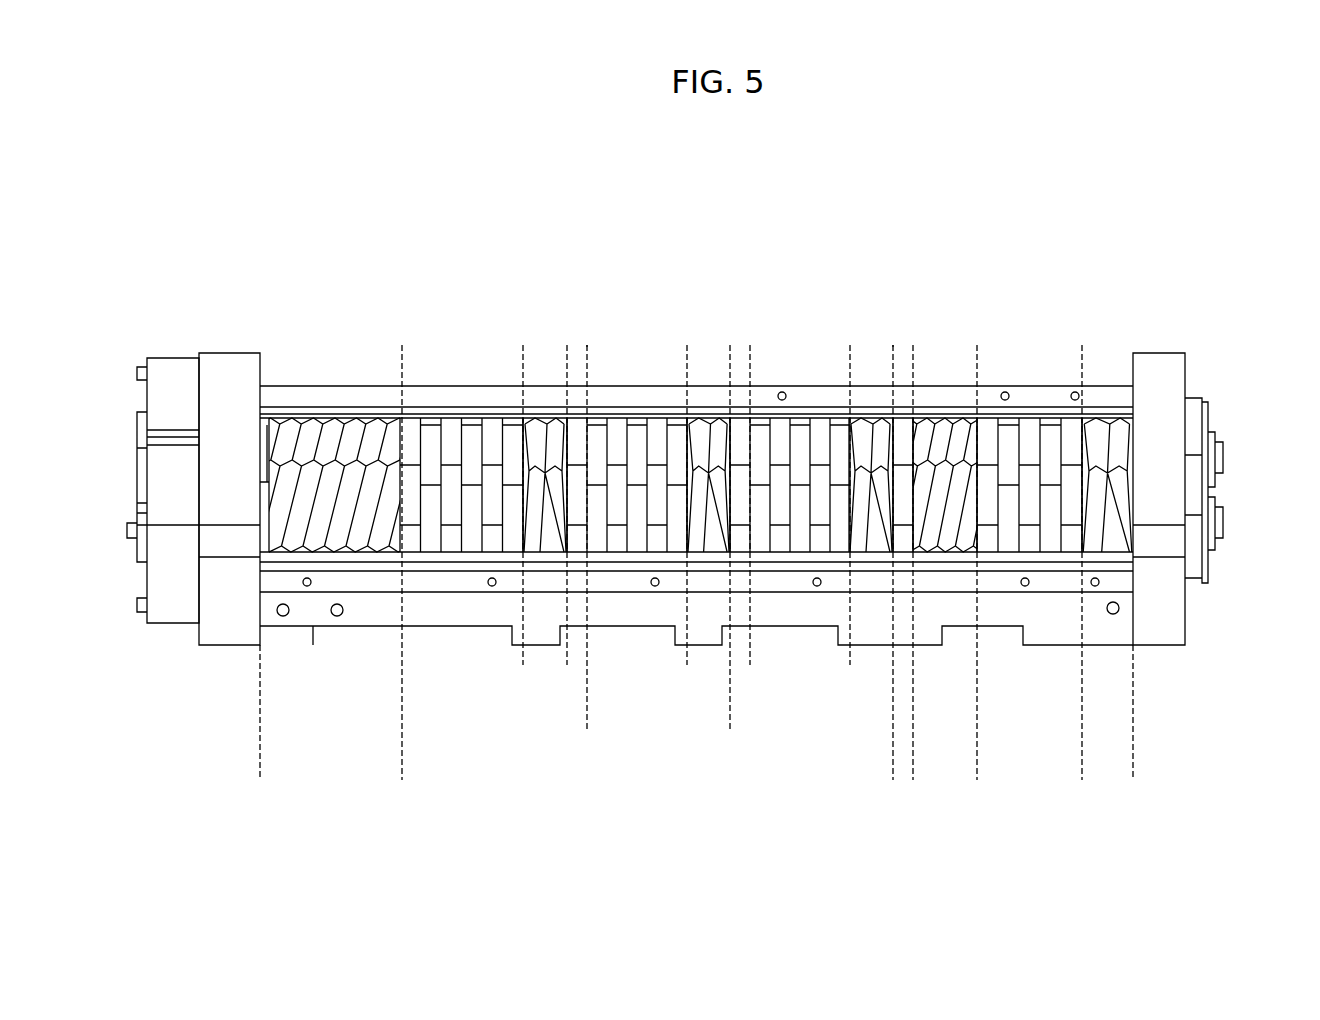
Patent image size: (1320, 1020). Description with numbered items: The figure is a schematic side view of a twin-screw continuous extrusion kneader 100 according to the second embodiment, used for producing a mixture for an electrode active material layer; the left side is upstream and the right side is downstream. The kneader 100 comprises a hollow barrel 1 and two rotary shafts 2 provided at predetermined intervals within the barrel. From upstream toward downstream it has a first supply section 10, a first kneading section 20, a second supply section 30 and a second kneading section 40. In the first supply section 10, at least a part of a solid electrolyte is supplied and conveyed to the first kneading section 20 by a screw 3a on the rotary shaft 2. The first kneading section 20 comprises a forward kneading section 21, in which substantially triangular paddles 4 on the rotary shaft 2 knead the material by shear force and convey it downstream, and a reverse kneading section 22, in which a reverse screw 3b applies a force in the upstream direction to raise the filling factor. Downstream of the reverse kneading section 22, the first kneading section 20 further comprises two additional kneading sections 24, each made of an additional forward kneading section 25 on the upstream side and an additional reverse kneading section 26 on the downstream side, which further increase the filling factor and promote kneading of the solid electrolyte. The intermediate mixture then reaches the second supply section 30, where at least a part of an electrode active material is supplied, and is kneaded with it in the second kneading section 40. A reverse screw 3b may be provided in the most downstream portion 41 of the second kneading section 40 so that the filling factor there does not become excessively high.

The twin-screw continuous extrusion kneader 100 is at (155, 267).
The hollow barrel 1 is at (227, 367).
The rotary shaft 2 is at (1225, 460).
The screw 3a is at (338, 437).
The reverse screw 3b is at (537, 437).
The paddle 4 is at (450, 437).
The first supply section 10 is at (260, 772).
The first kneading section 20 is at (402, 772).
The forward kneading section 21 is at (402, 657).
The reverse kneading section 22 is at (523, 657).
The additional kneading section 24 is at (820, 735).
The additional forward kneading section 25 is at (800, 670).
The additional reverse kneading section 26 is at (871, 670).
The second supply section 30 is at (913, 772).
The second kneading section 40 is at (977, 772).
The most downstream portion 41 is at (1082, 772).